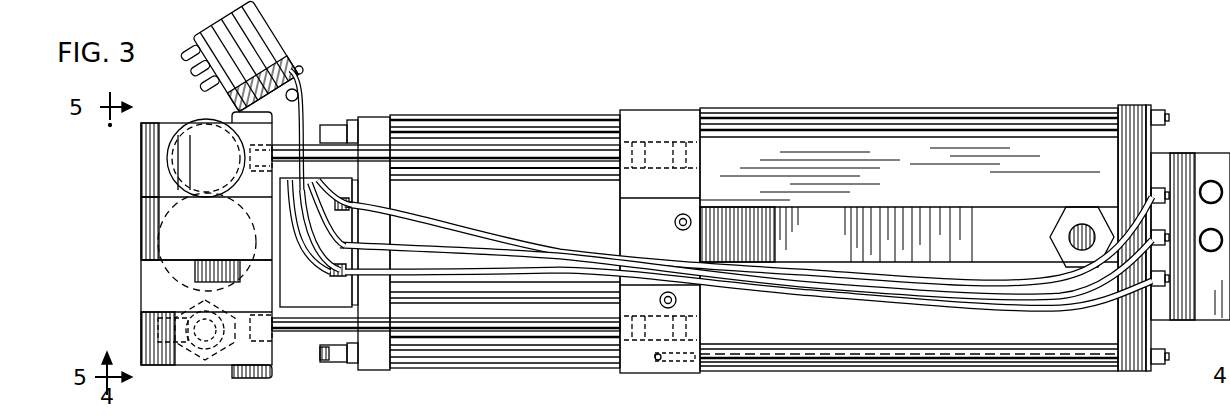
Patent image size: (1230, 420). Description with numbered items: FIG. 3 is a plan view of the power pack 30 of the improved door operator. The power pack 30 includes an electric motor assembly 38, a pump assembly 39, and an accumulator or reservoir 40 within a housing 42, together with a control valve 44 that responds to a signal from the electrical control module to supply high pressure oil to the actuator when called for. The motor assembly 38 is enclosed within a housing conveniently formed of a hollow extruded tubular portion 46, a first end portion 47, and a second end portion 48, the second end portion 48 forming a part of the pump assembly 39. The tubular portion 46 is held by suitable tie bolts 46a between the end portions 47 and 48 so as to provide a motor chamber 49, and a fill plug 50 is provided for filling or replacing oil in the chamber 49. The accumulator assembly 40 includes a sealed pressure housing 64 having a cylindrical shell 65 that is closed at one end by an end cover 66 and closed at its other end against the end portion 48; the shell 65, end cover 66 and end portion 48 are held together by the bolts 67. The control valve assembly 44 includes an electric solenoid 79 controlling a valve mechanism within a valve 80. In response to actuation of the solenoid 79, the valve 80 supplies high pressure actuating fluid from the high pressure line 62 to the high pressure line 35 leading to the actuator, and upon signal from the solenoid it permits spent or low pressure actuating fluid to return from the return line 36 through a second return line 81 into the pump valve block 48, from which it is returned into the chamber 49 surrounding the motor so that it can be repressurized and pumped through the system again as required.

The power pack 30 is at (943, 94).
The high pressure line 35 is at (199, 122).
The return line 36 is at (158, 329).
The electric motor assembly 38 is at (815, 336).
The pump assembly 39 is at (658, 367).
The accumulator or reservoir 40 is at (510, 310).
The housing 42 is at (586, 364).
The control valve 44 is at (209, 368).
The hollow extruded tubular portion 46 is at (1052, 140).
The tie bolts 46a is at (970, 116).
The first end portion 47 is at (1133, 113).
The second end portion 48 is at (660, 116).
The motor chamber 49 is at (1028, 120).
The fill plug 50 is at (1091, 210).
The high pressure line 62 is at (567, 147).
The sealed pressure housing 64 is at (481, 116).
The cylindrical shell 65 is at (437, 361).
The end cover 66 is at (378, 120).
The bolts 67 is at (334, 125).
The electric solenoid 79 is at (145, 283).
The valve 80 is at (143, 228).
The second return line 81 is at (528, 357).